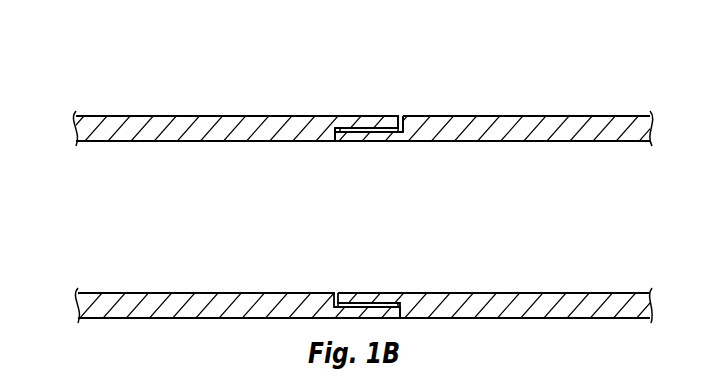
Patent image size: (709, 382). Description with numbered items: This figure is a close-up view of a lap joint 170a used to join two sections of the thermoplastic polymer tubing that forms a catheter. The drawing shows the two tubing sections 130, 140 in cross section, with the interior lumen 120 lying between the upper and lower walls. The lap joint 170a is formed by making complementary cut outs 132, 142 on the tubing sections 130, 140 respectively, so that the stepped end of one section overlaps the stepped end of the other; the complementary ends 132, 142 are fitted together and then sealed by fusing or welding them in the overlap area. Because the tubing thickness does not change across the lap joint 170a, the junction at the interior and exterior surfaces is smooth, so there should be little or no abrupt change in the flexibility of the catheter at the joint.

The interior lumen 120 is at (371, 179).
The tubing section 130 is at (202, 123).
The complementary cut out 132 is at (363, 128).
The tubing section 140 is at (562, 117).
The complementary cut out 142 is at (363, 136).
The lap joint 170a is at (399, 85).